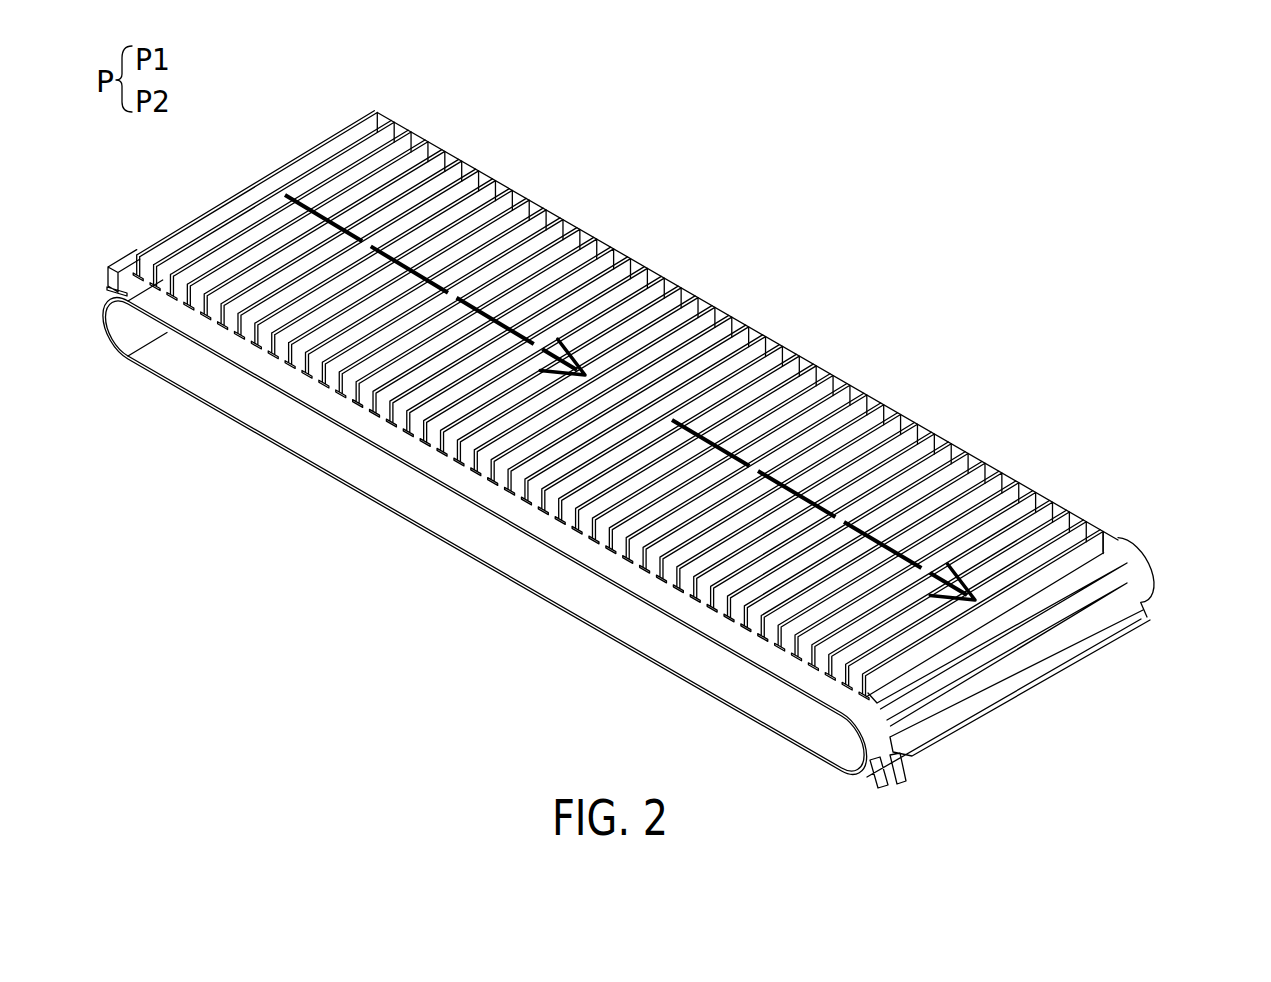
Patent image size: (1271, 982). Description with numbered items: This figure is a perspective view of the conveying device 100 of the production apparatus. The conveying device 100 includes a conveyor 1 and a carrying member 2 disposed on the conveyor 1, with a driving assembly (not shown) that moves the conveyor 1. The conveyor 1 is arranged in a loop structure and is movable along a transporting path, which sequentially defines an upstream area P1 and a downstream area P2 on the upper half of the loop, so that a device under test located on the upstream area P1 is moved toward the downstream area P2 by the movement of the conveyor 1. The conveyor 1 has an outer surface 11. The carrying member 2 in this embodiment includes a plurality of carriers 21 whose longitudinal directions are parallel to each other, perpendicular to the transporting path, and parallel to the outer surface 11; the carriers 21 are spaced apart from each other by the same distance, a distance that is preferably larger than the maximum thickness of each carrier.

The conveying device 100 is at (657, 434).
The conveyor 1 is at (657, 534).
The outer surface 11 is at (1145, 568).
The carrying member 2 is at (612, 405).
The carriers 21 is at (736, 246).
The upstream area P1 is at (350, 238).
The downstream area P2 is at (860, 527).